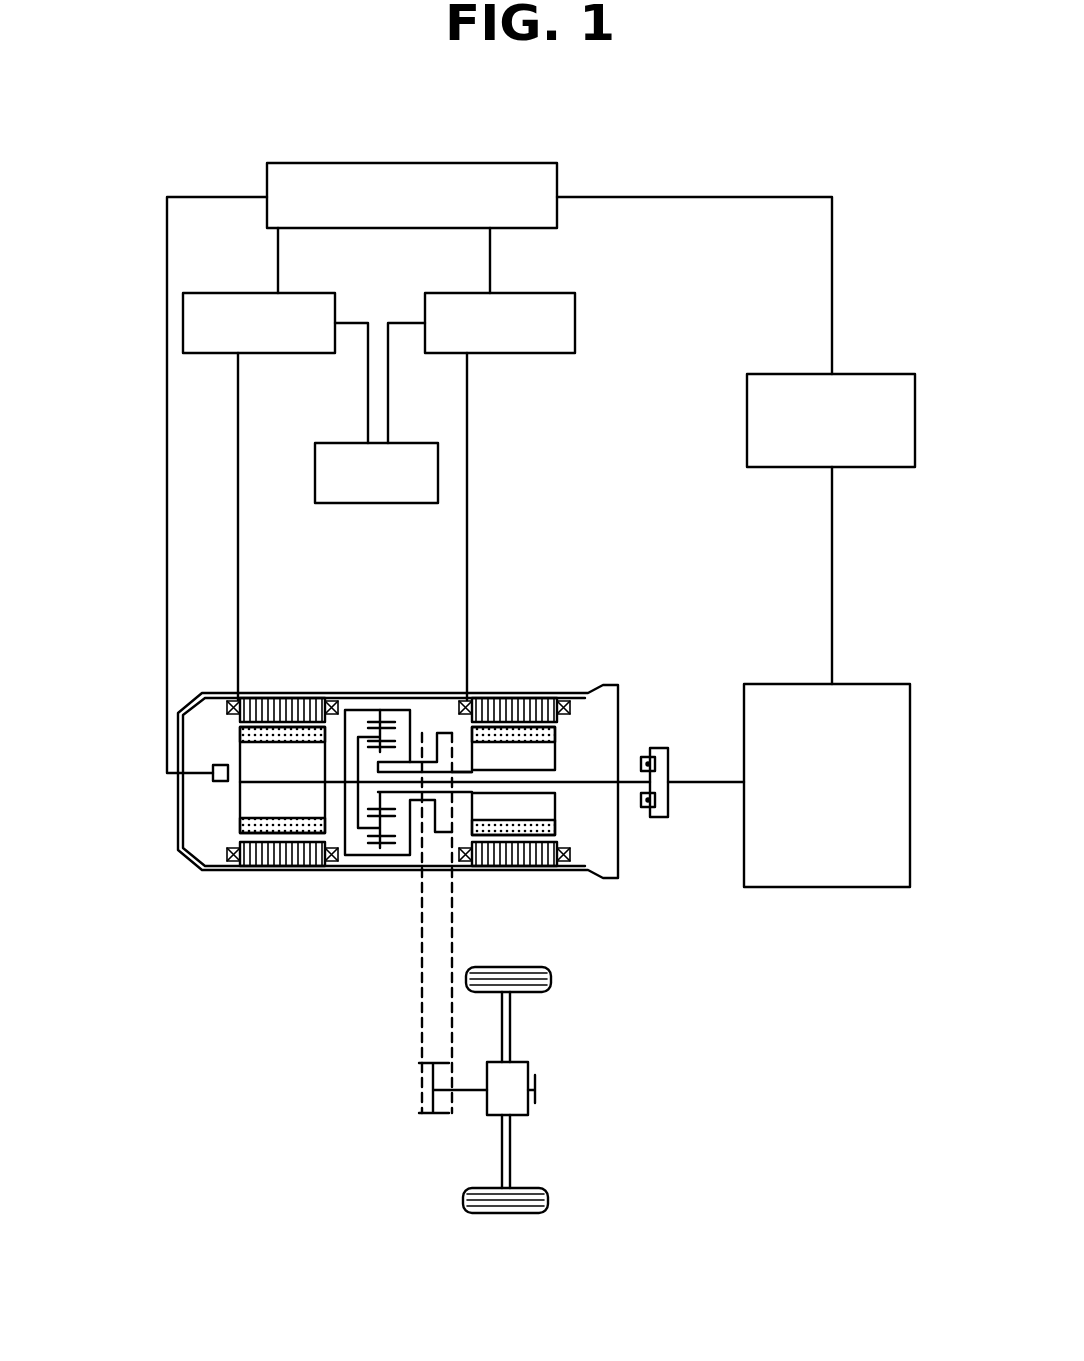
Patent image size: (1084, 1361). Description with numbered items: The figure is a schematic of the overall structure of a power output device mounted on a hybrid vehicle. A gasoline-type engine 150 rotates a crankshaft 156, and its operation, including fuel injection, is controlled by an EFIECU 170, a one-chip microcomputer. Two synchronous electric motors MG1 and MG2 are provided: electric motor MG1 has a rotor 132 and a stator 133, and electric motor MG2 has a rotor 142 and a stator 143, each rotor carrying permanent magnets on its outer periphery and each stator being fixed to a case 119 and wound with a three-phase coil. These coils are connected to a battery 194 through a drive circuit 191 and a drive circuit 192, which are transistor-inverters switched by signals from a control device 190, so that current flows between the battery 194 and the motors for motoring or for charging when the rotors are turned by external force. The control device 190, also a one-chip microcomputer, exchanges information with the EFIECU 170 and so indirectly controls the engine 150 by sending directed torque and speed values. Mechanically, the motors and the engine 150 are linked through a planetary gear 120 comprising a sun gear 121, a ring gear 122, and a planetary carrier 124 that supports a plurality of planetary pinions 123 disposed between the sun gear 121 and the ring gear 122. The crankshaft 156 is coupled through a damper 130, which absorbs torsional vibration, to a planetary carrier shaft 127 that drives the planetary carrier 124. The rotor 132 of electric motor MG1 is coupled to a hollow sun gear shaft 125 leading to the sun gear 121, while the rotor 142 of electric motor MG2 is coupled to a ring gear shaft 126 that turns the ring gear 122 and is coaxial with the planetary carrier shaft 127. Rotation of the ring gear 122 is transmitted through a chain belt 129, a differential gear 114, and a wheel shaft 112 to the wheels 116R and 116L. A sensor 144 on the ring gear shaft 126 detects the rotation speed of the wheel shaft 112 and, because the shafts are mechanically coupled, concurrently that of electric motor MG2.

The control device 190 is at (525, 163).
The drive circuit 191 is at (575, 335).
The drive circuit 192 is at (298, 293).
The battery 194 is at (407, 443).
The EFIECU 170 is at (887, 374).
The engine 150 is at (770, 684).
The crankshaft 156 is at (706, 782).
The damper 130 is at (663, 817).
The case 119 is at (208, 872).
The planetary gear 120 is at (392, 672).
The sun gear 121 is at (414, 740).
The ring gear 122 is at (347, 735).
The planetary pinion 123 is at (372, 722).
The planetary carrier 124 is at (358, 740).
The sun gear shaft 125 is at (458, 768).
The ring gear shaft 126 is at (255, 762).
The planetary carrier shaft 127 is at (582, 783).
The chain belt 129 is at (419, 1037).
The rotor 132 is at (538, 760).
The stator 133 is at (530, 698).
The rotor 142 is at (237, 805).
The stator 143 is at (252, 700).
The sensor 144 is at (220, 765).
The wheel shaft 112 is at (510, 1025).
The differential gear 114 is at (528, 1062).
The wheel 116R is at (551, 975).
The wheel 116L is at (548, 1203).
The electric motor MG1 is at (500, 672).
The electric motor MG2 is at (267, 670).